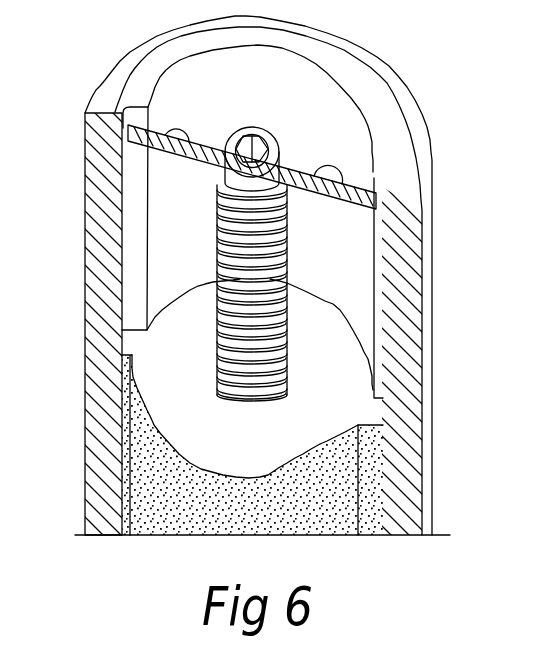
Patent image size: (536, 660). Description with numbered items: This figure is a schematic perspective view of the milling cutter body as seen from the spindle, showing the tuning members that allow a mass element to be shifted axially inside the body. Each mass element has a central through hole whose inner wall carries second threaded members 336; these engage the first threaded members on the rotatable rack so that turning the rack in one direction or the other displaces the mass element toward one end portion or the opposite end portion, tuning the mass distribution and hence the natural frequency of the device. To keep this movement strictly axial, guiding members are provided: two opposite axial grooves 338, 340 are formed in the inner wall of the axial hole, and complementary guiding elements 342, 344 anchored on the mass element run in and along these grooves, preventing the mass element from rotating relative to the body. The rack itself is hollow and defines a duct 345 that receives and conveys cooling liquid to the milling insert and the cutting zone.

The second threaded members 336 is at (218, 364).
The axial groove 338 is at (133, 217).
The axial groove 340 is at (377, 284).
The guiding element 342 is at (130, 344).
The guiding element 344 is at (368, 416).
The duct 345 is at (248, 161).